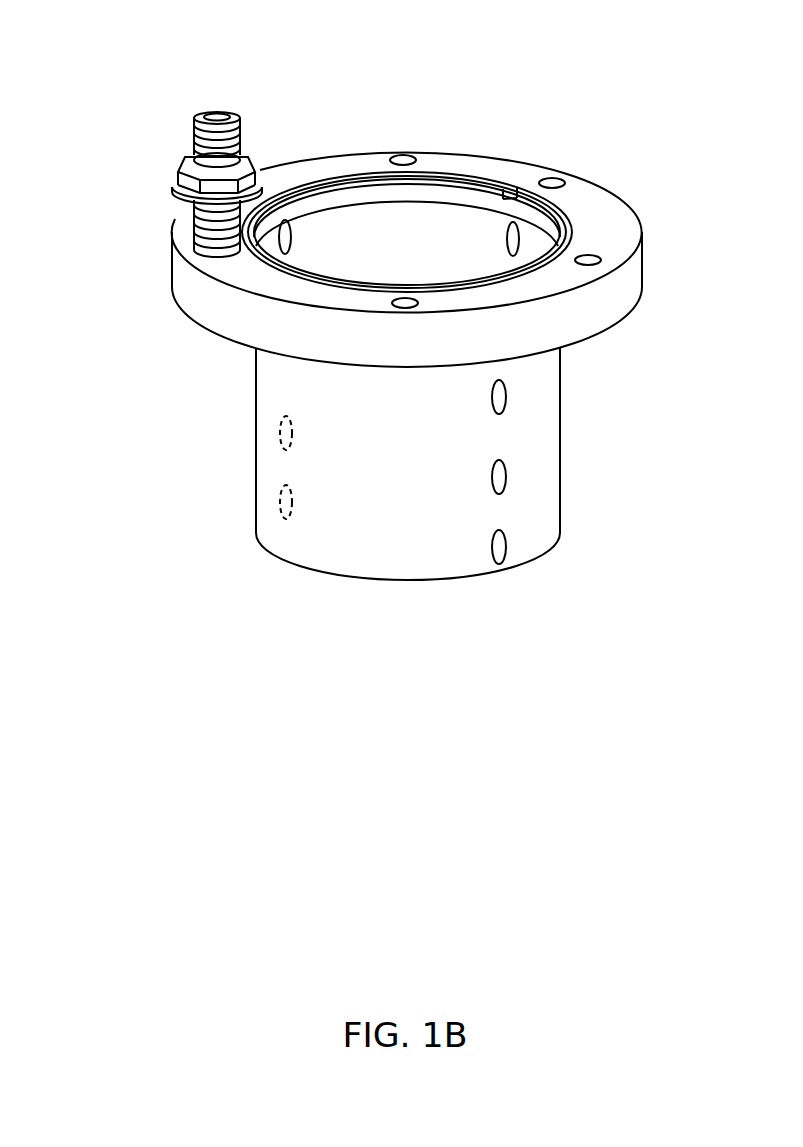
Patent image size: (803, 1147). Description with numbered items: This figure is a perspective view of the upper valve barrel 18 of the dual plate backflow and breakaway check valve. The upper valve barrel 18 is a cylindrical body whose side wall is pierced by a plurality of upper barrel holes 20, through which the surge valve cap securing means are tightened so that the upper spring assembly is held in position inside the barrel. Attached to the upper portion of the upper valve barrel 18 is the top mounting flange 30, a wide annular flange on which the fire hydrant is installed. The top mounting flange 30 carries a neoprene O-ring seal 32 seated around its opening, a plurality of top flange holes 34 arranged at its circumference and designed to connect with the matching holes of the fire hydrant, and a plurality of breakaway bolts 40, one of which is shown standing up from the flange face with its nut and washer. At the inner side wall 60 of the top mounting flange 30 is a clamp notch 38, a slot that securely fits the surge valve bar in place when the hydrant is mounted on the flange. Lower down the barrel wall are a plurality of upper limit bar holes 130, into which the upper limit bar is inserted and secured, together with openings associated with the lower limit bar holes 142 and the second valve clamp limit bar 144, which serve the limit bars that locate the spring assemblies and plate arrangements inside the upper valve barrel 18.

The upper valve barrel 18 is at (255, 372).
The upper barrel holes 20 is at (513, 238).
The top mounting flange 30 is at (172, 257).
The neoprene O-ring seal 32 is at (438, 170).
The top flange holes 34 is at (582, 264).
The clamp notch 38 is at (507, 192).
The breakaway bolts 40 is at (193, 137).
The inner side wall 60 is at (325, 218).
The upper limit bar holes 130 is at (507, 392).
The lower limit bar holes 142 is at (507, 548).
The second valve clamp limit bar 144 is at (507, 476).